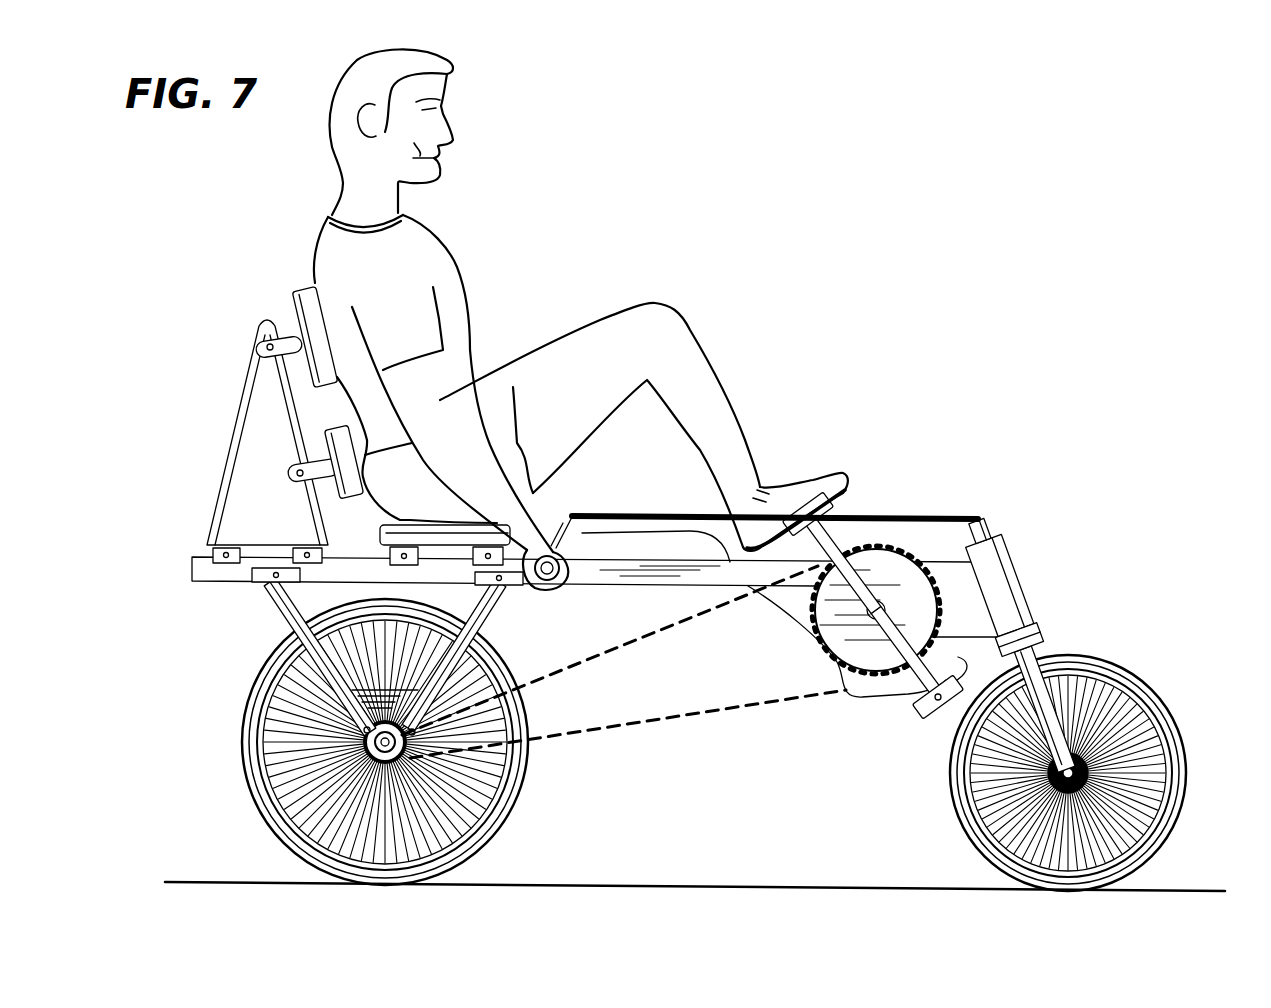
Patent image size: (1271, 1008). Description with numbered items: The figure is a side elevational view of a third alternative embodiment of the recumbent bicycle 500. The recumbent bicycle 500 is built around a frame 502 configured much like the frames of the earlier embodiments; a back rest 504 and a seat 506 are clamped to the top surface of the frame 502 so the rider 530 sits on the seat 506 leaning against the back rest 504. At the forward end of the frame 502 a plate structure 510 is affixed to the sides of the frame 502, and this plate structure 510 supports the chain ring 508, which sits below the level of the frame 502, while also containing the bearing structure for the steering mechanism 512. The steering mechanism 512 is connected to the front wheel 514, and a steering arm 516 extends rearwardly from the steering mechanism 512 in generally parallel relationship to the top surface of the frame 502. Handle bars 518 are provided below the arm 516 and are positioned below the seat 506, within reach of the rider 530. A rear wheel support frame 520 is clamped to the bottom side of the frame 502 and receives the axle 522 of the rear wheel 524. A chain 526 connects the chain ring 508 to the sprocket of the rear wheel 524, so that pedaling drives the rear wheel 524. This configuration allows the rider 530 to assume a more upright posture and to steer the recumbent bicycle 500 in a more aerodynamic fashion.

The recumbent bicycle 500 is at (822, 378).
The frame 502 is at (210, 578).
The back rest 504 is at (235, 424).
The seat 506 is at (560, 518).
The chain ring 508 is at (905, 545).
The plate structure 510 is at (1020, 592).
The steering mechanism 512 is at (1003, 533).
The front wheel 514 is at (1135, 670).
The steering arm 516 is at (850, 515).
The handle bars 518 is at (562, 574).
The rear wheel support frame 520 is at (283, 603).
The axle 522 is at (275, 793).
The rear wheel 524 is at (520, 790).
The chain 526 is at (700, 712).
The rider 530 is at (690, 320).